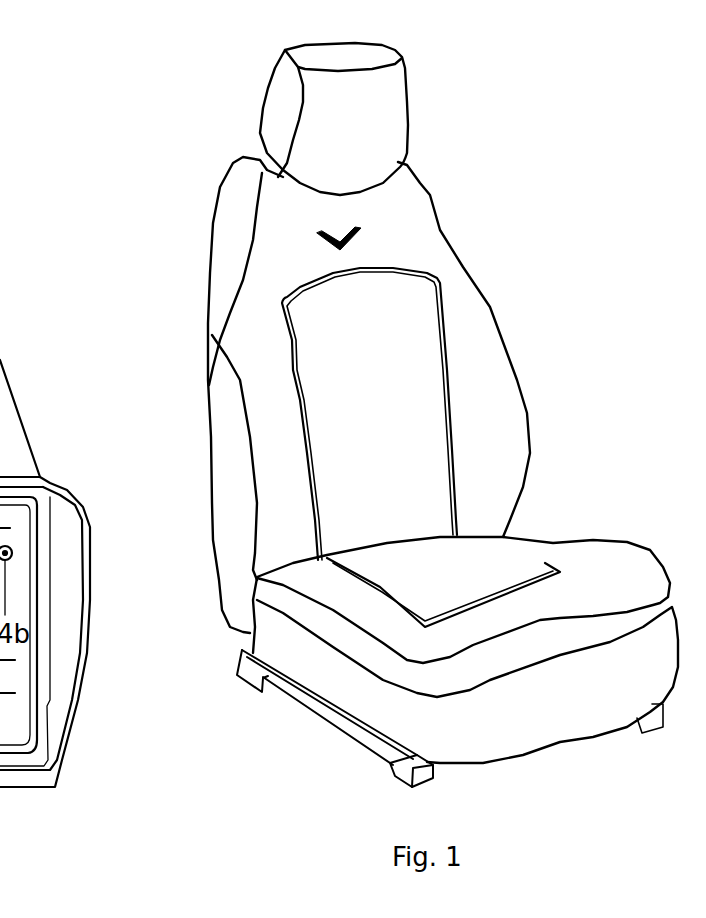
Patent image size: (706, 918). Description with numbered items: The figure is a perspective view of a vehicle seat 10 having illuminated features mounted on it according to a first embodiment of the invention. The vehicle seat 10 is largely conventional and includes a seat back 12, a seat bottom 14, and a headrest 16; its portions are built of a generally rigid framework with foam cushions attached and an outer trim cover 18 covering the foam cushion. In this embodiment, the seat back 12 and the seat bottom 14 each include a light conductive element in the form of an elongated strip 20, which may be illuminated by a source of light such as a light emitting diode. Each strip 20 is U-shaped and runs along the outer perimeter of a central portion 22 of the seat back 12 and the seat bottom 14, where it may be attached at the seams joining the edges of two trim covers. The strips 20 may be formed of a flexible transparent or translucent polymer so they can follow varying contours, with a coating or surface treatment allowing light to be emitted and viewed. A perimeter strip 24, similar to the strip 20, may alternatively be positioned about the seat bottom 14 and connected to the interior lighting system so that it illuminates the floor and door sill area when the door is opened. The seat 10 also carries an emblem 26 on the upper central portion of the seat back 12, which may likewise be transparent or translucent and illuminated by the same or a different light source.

The vehicle seat 10 is at (143, 201).
The seat back 12 is at (473, 207).
The seat bottom 14 is at (602, 492).
The headrest 16 is at (433, 96).
The outer trim cover 18 is at (475, 352).
The strip 20 is at (313, 447).
The central portion 22 is at (368, 383).
The perimeter strip 24 is at (503, 678).
The emblem 26 is at (340, 240).